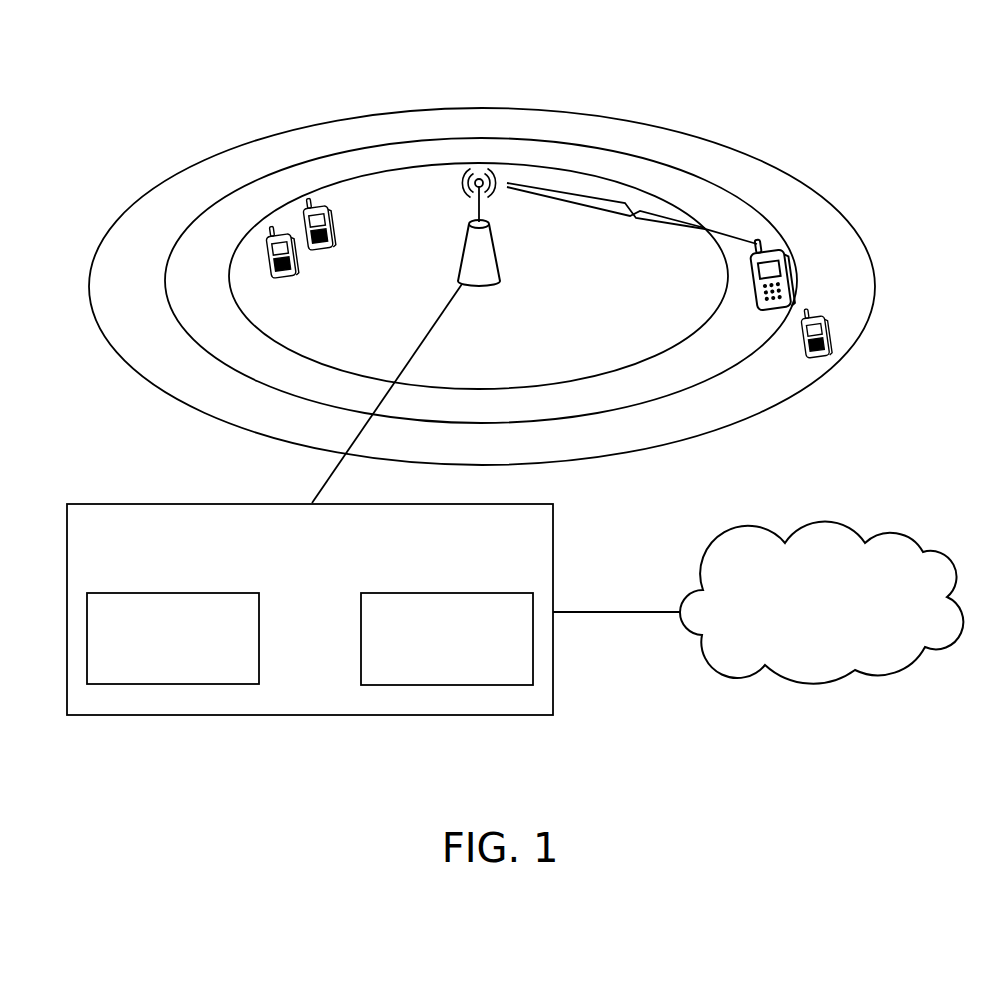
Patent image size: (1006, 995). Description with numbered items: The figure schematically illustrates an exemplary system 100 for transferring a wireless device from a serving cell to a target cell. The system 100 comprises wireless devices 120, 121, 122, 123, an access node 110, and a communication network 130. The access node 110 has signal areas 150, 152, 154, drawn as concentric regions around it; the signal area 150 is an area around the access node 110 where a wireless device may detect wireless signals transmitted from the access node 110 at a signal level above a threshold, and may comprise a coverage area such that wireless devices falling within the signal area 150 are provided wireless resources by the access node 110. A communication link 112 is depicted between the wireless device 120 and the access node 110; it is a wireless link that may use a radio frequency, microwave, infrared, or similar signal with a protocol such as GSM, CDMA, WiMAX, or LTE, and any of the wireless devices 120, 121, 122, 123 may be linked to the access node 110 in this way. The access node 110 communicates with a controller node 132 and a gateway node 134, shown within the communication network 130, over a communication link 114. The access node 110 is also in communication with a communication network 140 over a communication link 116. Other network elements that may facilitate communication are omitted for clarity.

The system 100 is at (205, 75).
The access node 110 is at (475, 218).
The communication link 112 is at (630, 220).
The communication link 114 is at (455, 307).
The communication link 116 is at (657, 612).
The wireless device 120 is at (785, 268).
The wireless device 121 is at (291, 261).
The wireless device 122 is at (329, 232).
The wireless device 123 is at (818, 357).
The communication network 130 is at (291, 564).
The controller node 132 is at (156, 679).
The gateway node 134 is at (430, 674).
The communication network 140 is at (821, 603).
The signal area 150 is at (190, 405).
The signal area 152 is at (337, 408).
The signal area 154 is at (308, 357).